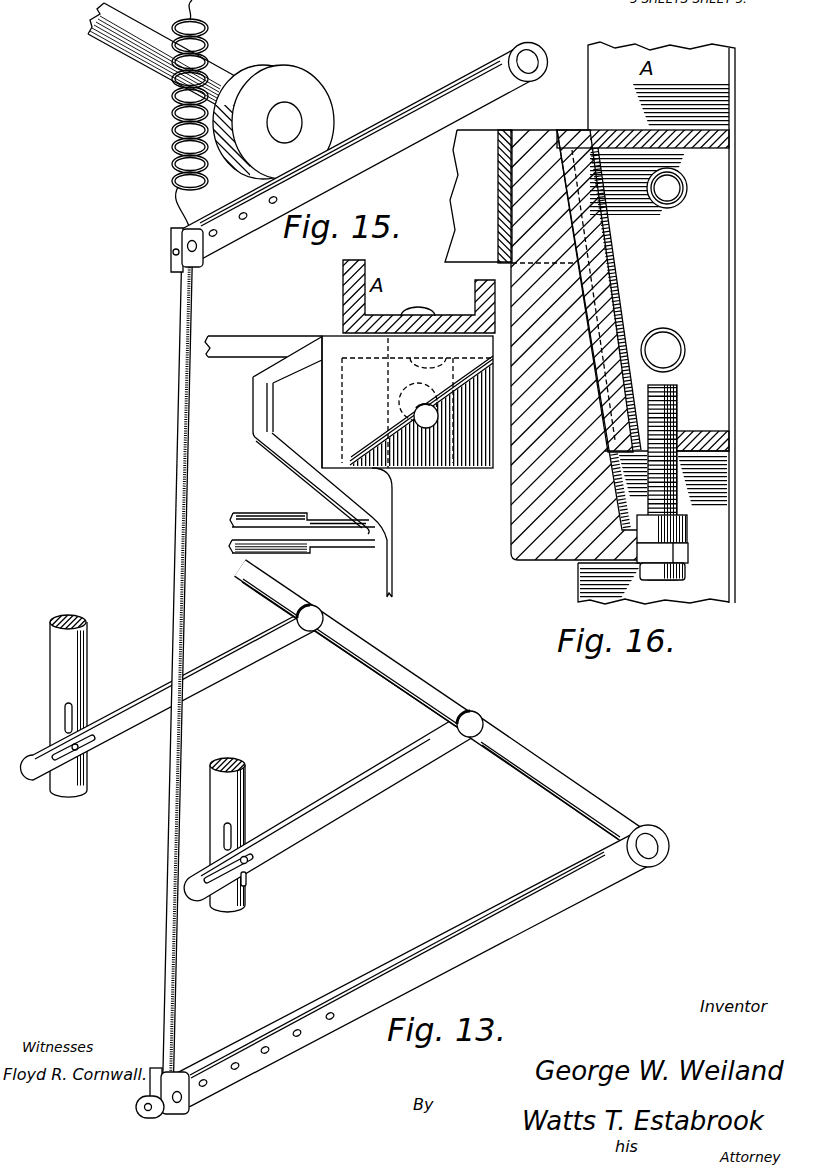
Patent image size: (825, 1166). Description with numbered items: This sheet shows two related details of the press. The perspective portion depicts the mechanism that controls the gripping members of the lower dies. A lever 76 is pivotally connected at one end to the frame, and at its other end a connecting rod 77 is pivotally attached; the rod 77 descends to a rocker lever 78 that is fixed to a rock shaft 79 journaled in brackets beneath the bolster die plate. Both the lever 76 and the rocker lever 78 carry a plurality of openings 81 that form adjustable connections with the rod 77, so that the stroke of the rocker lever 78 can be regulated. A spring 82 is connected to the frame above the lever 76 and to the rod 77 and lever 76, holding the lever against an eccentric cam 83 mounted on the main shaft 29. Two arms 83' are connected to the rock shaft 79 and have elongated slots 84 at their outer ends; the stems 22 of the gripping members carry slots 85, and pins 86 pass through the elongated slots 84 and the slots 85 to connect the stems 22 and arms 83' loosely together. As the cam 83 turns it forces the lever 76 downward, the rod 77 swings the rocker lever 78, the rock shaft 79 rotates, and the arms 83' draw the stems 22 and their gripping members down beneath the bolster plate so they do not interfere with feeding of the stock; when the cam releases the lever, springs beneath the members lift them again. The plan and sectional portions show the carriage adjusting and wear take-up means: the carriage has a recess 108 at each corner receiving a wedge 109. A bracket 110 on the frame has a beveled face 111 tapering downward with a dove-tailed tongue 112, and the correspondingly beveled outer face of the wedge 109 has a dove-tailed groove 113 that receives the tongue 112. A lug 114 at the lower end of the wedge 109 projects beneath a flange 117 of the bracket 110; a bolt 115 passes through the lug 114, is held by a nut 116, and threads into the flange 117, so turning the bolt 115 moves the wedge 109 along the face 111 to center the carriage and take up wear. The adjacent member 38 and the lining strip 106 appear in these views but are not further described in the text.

In FIG. 13, the main shaft 29 is at (215, 78).
In FIG. 13, the eccentric cam 83 is at (225, 162).
In FIG. 13, the spring 82 is at (177, 117).
In FIG. 13, the lever 76 is at (374, 156).
In FIG. 13, the stem 22 is at (73, 670).
In FIG. 13, the arm 83' is at (167, 696).
In FIG. 13, the connecting rod 77 is at (173, 748).
In FIG. 13, the slot 85 is at (227, 837).
In FIG. 13, the elongated slot 84 is at (250, 863).
In FIG. 13, the pin 86 is at (243, 886).
In FIG. 13, the rock shaft 79 is at (438, 702).
In FIG. 13, the rocker lever 78 is at (500, 910).
In FIG. 13, the openings 81 is at (262, 1053).
In FIG. 15, the rail 38 is at (247, 348).
In FIG. 16, the rail 38 is at (478, 196).
In FIG. 15, the dove-tailed groove 113 is at (322, 430).
In FIG. 15, the dove-tailed tongue 112 is at (318, 404).
In FIG. 15, the recess 108 is at (253, 432).
In FIG. 15, the wedge 109 is at (300, 430).
In FIG. 16, the wedge 109 is at (532, 138).
In FIG. 15, the nut 116 is at (425, 428).
In FIG. 16, the nut 116 is at (687, 523).
In FIG. 15, the bracket 110 is at (437, 463).
In FIG. 16, the bracket 110 is at (660, 270).
In FIG. 15, the bolt 115 is at (390, 465).
In FIG. 16, the bolt 115 is at (680, 397).
In FIG. 16, the lining strip 106 is at (509, 181).
In FIG. 16, the beveled face 111 is at (593, 323).
In FIG. 16, the flange 117 is at (730, 433).
In FIG. 16, the lug 114 is at (637, 548).